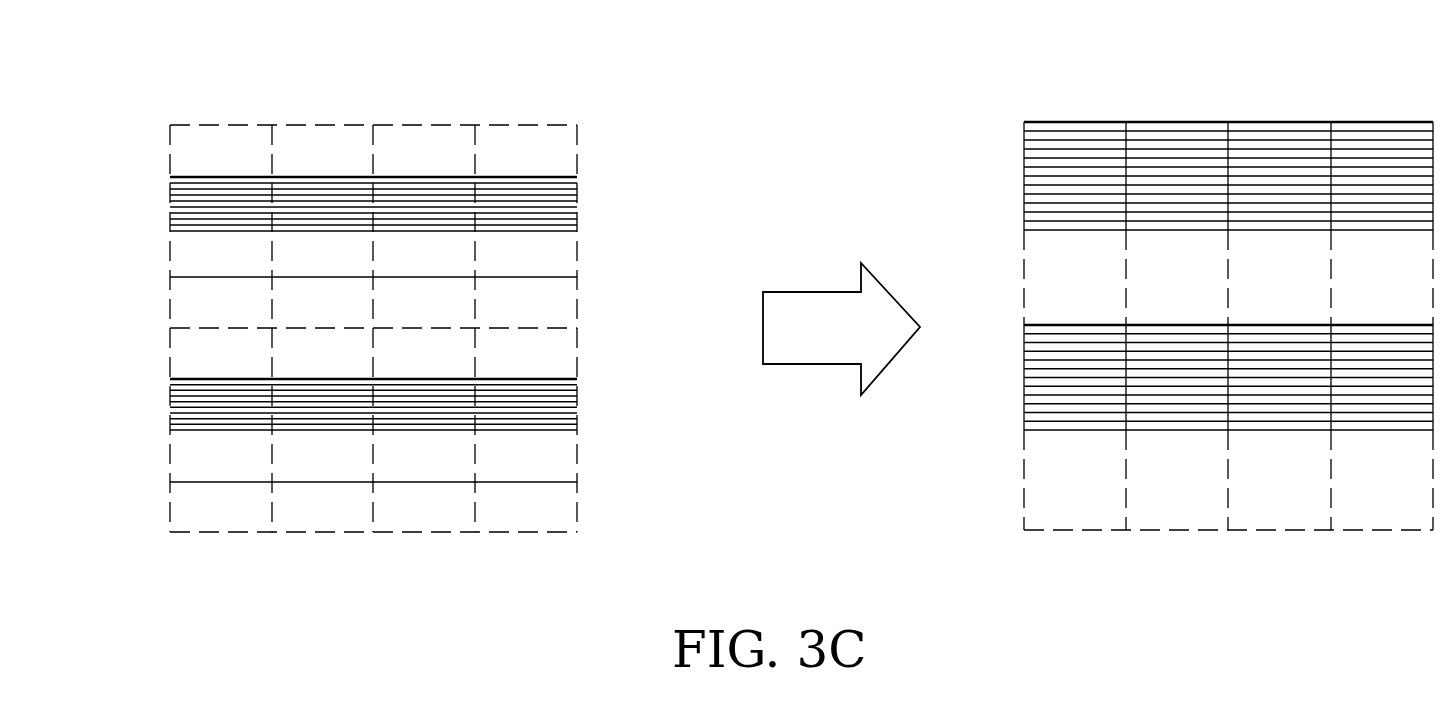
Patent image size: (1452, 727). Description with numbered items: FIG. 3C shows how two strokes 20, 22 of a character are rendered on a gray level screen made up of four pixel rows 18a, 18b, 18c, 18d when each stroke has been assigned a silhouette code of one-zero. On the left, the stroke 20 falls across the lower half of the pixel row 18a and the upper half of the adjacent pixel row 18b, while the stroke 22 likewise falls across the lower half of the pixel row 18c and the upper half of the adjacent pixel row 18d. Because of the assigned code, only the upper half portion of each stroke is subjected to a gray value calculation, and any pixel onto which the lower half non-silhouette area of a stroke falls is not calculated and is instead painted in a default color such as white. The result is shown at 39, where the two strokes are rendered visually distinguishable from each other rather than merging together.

The pixel row 18a is at (386, 201).
The pixel row 18b is at (600, 237).
The pixel row 18c is at (385, 412).
The pixel row 18d is at (600, 440).
The stroke 20 is at (152, 177).
The stroke 22 is at (152, 385).
The rendered result 39 is at (1223, 107).